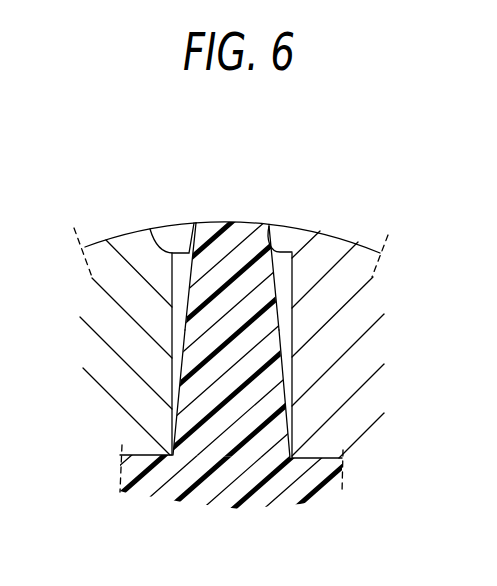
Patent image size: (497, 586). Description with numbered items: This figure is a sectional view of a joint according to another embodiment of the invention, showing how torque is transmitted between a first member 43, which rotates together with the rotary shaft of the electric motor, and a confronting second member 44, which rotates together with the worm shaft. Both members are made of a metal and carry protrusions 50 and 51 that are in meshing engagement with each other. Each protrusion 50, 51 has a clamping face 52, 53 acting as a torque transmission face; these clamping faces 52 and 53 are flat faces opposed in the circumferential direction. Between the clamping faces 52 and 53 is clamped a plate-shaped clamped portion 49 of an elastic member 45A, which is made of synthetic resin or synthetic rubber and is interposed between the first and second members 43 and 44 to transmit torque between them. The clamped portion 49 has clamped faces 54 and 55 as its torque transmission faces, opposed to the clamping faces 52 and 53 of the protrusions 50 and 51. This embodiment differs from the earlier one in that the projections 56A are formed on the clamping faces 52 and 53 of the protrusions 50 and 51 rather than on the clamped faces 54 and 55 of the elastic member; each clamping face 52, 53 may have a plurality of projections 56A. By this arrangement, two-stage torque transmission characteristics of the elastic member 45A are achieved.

The first member 43 is at (121, 324).
The second member 44 is at (341, 331).
The elastic member 45A is at (248, 329).
The clamped portion 49 is at (253, 414).
The protrusion 50 is at (140, 247).
The protrusion 51 is at (328, 253).
The clamping face 52 is at (190, 303).
The clamping face 53 is at (276, 296).
The clamped face 54 is at (187, 348).
The clamped face 55 is at (277, 343).
The projection 56A is at (187, 240).